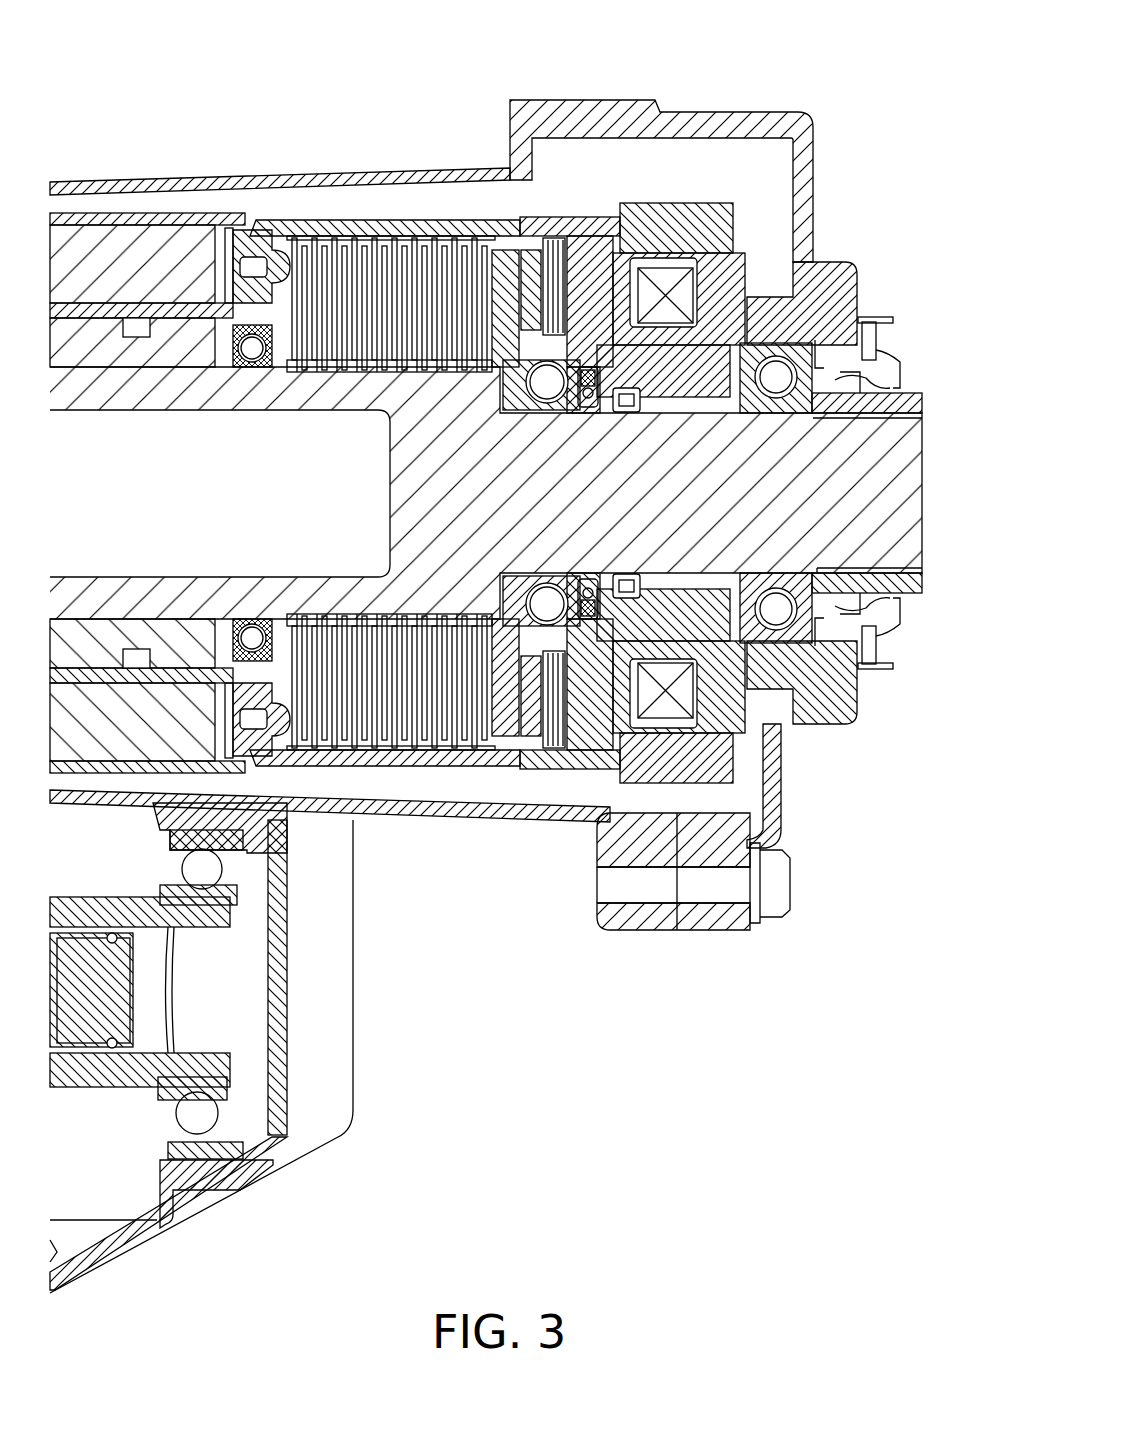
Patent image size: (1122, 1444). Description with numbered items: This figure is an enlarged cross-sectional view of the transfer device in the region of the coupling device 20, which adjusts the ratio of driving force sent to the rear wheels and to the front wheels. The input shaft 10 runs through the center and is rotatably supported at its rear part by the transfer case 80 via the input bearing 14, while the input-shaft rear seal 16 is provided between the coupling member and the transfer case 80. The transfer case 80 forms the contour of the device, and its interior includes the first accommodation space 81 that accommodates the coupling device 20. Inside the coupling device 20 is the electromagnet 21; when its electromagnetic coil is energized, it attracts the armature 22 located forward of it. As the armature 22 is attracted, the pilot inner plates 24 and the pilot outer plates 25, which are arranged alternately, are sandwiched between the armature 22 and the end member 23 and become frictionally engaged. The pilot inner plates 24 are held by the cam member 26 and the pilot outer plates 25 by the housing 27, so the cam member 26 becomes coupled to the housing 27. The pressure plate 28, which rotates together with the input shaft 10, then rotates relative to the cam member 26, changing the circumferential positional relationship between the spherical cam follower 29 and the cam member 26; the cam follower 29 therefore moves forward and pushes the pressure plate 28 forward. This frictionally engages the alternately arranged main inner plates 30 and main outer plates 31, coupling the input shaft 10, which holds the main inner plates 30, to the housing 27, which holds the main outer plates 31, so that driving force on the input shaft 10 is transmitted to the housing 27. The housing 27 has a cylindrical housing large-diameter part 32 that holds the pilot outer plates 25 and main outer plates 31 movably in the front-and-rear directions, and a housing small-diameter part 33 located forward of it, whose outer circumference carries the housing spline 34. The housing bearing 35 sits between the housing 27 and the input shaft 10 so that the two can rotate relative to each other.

The input shaft 10 is at (903, 435).
The input bearing 14 is at (822, 335).
The input-shaft rear seal 16 is at (888, 355).
The coupling device 20 is at (412, 198).
The electromagnet 21 is at (690, 290).
The armature 22 is at (525, 245).
The end member 23 is at (598, 245).
The pilot inner plates 24 is at (605, 415).
The pilot outer plates 25 is at (560, 250).
The cam member 26 is at (588, 405).
The housing 27 is at (652, 203).
The pressure plate 28 is at (465, 238).
The cam follower 29 is at (535, 395).
The main inner plates 30 is at (415, 362).
The main outer plates 31 is at (338, 234).
The housing large-diameter part 32 is at (372, 234).
The housing small-diameter part 33 is at (178, 312).
The housing spline 34 is at (127, 310).
The housing bearing 35 is at (243, 318).
The transfer case 80 is at (790, 125).
The first accommodation space 81 is at (312, 217).